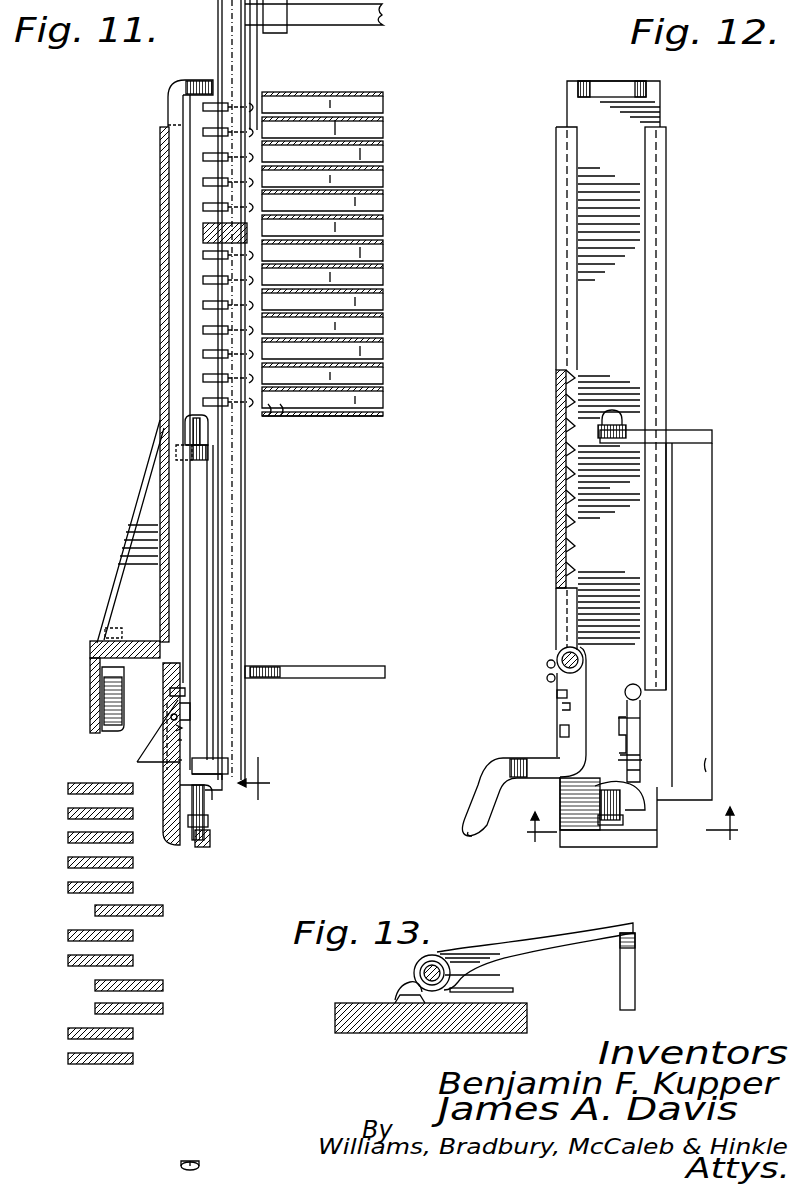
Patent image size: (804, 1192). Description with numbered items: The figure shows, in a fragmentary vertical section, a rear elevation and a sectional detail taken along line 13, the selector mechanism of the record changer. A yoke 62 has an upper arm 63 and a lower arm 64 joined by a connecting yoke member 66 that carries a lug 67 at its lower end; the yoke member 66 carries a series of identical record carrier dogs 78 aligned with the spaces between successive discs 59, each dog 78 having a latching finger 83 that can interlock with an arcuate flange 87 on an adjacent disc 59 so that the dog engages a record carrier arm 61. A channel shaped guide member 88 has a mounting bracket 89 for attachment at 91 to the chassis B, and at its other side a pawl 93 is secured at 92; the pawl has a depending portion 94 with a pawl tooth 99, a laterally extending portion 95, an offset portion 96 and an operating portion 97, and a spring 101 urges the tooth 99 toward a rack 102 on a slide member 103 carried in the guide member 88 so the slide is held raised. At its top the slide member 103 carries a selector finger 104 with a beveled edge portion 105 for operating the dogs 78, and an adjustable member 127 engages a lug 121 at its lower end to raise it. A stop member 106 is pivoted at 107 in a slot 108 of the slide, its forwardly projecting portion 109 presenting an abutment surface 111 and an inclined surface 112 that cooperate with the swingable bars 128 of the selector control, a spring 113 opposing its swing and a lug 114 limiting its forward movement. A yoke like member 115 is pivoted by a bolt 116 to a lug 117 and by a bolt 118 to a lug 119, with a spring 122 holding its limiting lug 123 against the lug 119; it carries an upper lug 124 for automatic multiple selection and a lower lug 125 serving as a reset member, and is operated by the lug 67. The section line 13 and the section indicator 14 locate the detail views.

In FIG. 12, the section line 13- 13 is at (635, 826).
In FIG. 11, the section line / bearing block 14 is at (287, 34).
In FIG. 11, the discs 59 is at (383, 120).
In FIG. 11, the record carrier arms 61 is at (383, 200).
In FIG. 11, the yoke 62 is at (216, 12).
In FIG. 11, the upper arm 63 is at (384, 20).
In FIG. 11, the lower arm 64 is at (380, 666).
In FIG. 11, the connecting yoke member 66 is at (247, 540).
In FIG. 11, the lug 67 is at (222, 763).
In FIG. 11, the record carrier dog 78 is at (203, 132).
In FIG. 11, the latching finger 83 is at (256, 135).
In FIG. 11, the arcuate flange 87 is at (283, 402).
In FIG. 11, the guide member 88 is at (160, 170).
In FIG. 12, the guide member 88 is at (667, 198).
In FIG. 11, the mounting bracket 89 is at (120, 556).
In FIG. 11, the supporting attachment 91 is at (104, 626).
In FIG. 12, the pawl securing point 92 is at (557, 655).
In FIG. 12, the pawl 93 is at (548, 674).
In FIG. 12, the depending portion 94 is at (588, 700).
In FIG. 12, the laterally extending portion 95 is at (555, 778).
In FIG. 12, the offset portion 96 is at (500, 762).
In FIG. 12, the operating portion 97 is at (468, 833).
In FIG. 12, the pawl tooth 99 is at (560, 730).
In FIG. 12, the spring 101 is at (562, 708).
In FIG. 12, the rack 102 is at (557, 694).
In FIG. 11, the slide member 103 is at (181, 318).
In FIG. 12, the slide member 103 is at (662, 92).
In FIG. 13, the slide member 103 is at (378, 1035).
In FIG. 11, the selector finger 104 is at (204, 80).
In FIG. 12, the selector finger 104 is at (604, 80).
In FIG. 12, the beveled edge portion 105 is at (578, 91).
In FIG. 11, the stop member 106 is at (187, 740).
In FIG. 11, the pivot 107 is at (171, 716).
In FIG. 12, the pivot 107 is at (641, 716).
In FIG. 11, the slot 108 is at (170, 692).
In FIG. 12, the slot 108 is at (642, 760).
In FIG. 11, the forwardly projecting portion 109 is at (175, 728).
In FIG. 11, the abutment surface 111 is at (178, 760).
In FIG. 11, the inclined surface 112 is at (140, 760).
In FIG. 11, the spring 113 is at (181, 708).
In FIG. 12, the spring 113 is at (645, 690).
In FIG. 11, the lug 114 is at (178, 740).
In FIG. 12, the lug 114 is at (619, 735).
In FIG. 11, the yoke like member 115 is at (210, 505).
In FIG. 12, the yoke like member 115 is at (712, 505).
In FIG. 13, the yoke like member 115 is at (562, 942).
In FIG. 11, the bolt 116 is at (188, 418).
In FIG. 12, the bolt 116 is at (604, 418).
In FIG. 11, the lug 117 is at (185, 424).
In FIG. 12, the lug 117 is at (598, 432).
In FIG. 11, the bolt 118 is at (181, 788).
In FIG. 12, the bolt 118 is at (632, 790).
In FIG. 11, the lug 119 is at (205, 808).
In FIG. 12, the lug 119 is at (625, 822).
In FIG. 13, the lug 119 is at (398, 997).
In FIG. 11, the lug 121 is at (210, 841).
In FIG. 12, the lug 121 is at (632, 840).
In FIG. 11, the spring 122 is at (208, 824).
In FIG. 12, the spring 122 is at (610, 835).
In FIG. 13, the spring 122 is at (448, 962).
In FIG. 13, the limiting lug 123 is at (400, 985).
In FIG. 12, the upper lug 124 is at (672, 432).
In FIG. 12, the lower lug 125 is at (708, 766).
In FIG. 13, the lower lug 125 is at (637, 959).
In FIG. 11, the adjustable member 127 is at (185, 1162).
In FIG. 11, the horizontally swingable bars 128 is at (68, 838).
In FIG. 11, the chassis B is at (90, 684).